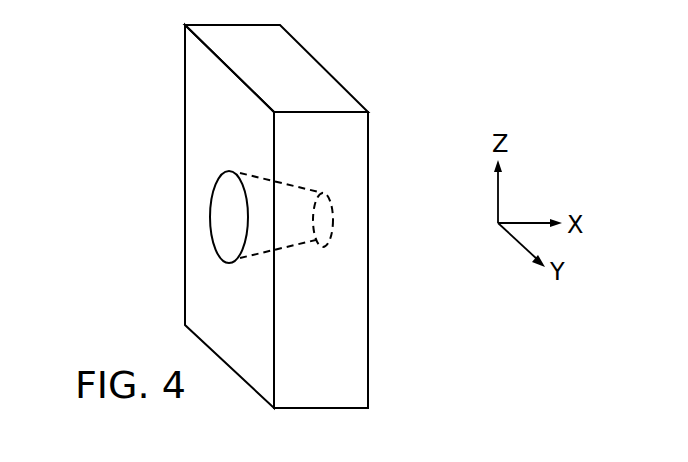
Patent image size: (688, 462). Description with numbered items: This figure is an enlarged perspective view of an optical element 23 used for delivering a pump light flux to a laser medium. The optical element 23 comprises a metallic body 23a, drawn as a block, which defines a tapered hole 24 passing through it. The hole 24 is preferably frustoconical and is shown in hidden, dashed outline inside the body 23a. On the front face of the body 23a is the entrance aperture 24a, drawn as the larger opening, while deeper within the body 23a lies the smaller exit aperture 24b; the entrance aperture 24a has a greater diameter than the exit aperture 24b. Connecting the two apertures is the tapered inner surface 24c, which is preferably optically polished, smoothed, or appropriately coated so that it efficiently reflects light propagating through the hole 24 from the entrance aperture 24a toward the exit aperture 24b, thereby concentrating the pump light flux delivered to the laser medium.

The optical element 23 is at (350, 327).
The metallic body 23a is at (292, 62).
The tapered hole 24 is at (293, 205).
The entrance aperture 24a is at (228, 218).
The exit aperture 24b is at (323, 217).
The tapered inner surface 24c is at (285, 248).